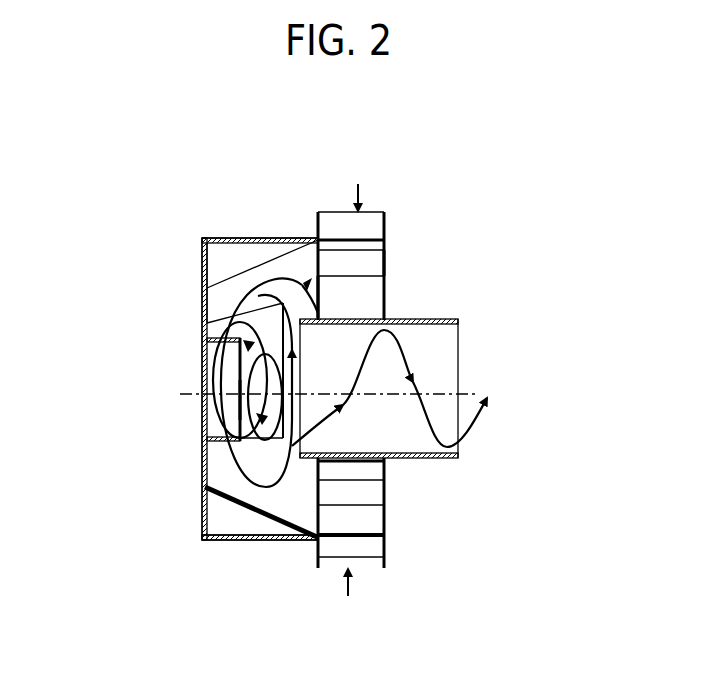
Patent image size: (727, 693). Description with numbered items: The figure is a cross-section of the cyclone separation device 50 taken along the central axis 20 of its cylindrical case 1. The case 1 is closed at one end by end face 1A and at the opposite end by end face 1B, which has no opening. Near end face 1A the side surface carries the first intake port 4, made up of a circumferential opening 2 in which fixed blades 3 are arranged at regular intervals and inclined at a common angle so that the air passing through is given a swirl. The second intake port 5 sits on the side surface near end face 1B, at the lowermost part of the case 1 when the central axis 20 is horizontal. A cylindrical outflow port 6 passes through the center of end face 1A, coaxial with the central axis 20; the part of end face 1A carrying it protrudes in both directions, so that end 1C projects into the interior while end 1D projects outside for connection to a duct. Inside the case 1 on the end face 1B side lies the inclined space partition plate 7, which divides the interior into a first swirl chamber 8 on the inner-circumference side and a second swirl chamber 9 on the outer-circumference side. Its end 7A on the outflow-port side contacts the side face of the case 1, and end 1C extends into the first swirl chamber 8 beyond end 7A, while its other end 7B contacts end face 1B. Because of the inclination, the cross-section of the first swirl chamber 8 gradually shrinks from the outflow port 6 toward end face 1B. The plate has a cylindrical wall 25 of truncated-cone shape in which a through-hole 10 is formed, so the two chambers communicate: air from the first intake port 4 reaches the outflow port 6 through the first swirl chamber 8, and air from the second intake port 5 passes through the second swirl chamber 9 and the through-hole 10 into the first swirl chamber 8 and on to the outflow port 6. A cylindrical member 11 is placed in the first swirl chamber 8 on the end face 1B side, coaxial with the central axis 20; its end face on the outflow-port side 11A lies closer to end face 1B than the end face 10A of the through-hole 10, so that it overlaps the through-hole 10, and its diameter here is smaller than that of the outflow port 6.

The cyclone separation device 50 is at (128, 117).
The cylindrical case 1 is at (197, 207).
The end face 1A is at (390, 265).
The end face 1B is at (202, 252).
The end 1C is at (320, 315).
The end 1D is at (457, 320).
The opening 2 is at (365, 570).
The fixed blades 3 is at (365, 518).
The first intake port 4 is at (355, 492).
The second intake port 5 is at (203, 540).
The outflow port 6 is at (435, 343).
The space partition plate 7 is at (241, 270).
The end 7A is at (317, 240).
The end 7B is at (203, 290).
The first swirl chamber 8 is at (293, 483).
The second swirl chamber 9 is at (222, 262).
The through-hole 10 is at (262, 359).
The end face 10A is at (282, 377).
The cylindrical member 11 is at (220, 425).
The end face on the outflow-port side 11A is at (240, 400).
The central axis 20 is at (453, 393).
The cylindrical wall 25 is at (280, 523).